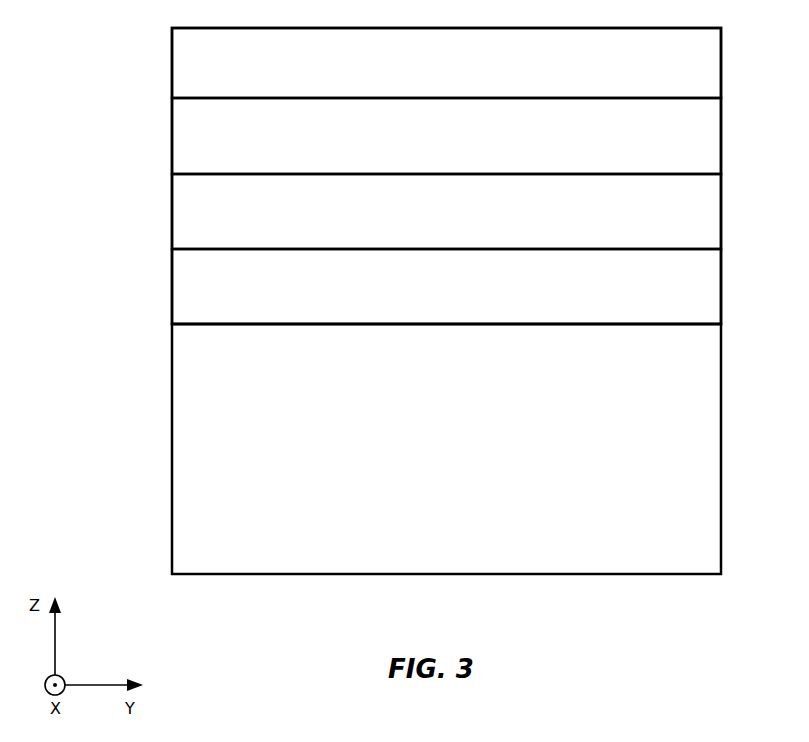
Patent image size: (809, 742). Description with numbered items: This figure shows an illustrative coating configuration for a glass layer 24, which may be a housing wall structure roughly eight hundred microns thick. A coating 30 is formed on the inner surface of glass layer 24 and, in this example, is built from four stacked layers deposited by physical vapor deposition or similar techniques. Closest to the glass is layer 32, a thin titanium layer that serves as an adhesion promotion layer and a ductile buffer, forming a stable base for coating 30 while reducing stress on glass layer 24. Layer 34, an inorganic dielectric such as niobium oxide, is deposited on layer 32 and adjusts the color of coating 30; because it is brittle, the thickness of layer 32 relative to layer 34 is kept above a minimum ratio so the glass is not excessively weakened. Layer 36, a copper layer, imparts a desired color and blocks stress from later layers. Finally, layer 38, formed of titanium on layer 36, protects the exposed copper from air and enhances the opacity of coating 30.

The glass layer 24 is at (715, 465).
The coating 30 is at (150, 332).
The titanium layer 32 is at (715, 287).
The inorganic dielectric layer 34 is at (715, 212).
The copper layer 36 is at (715, 137).
The titanium protective layer 38 is at (715, 68).